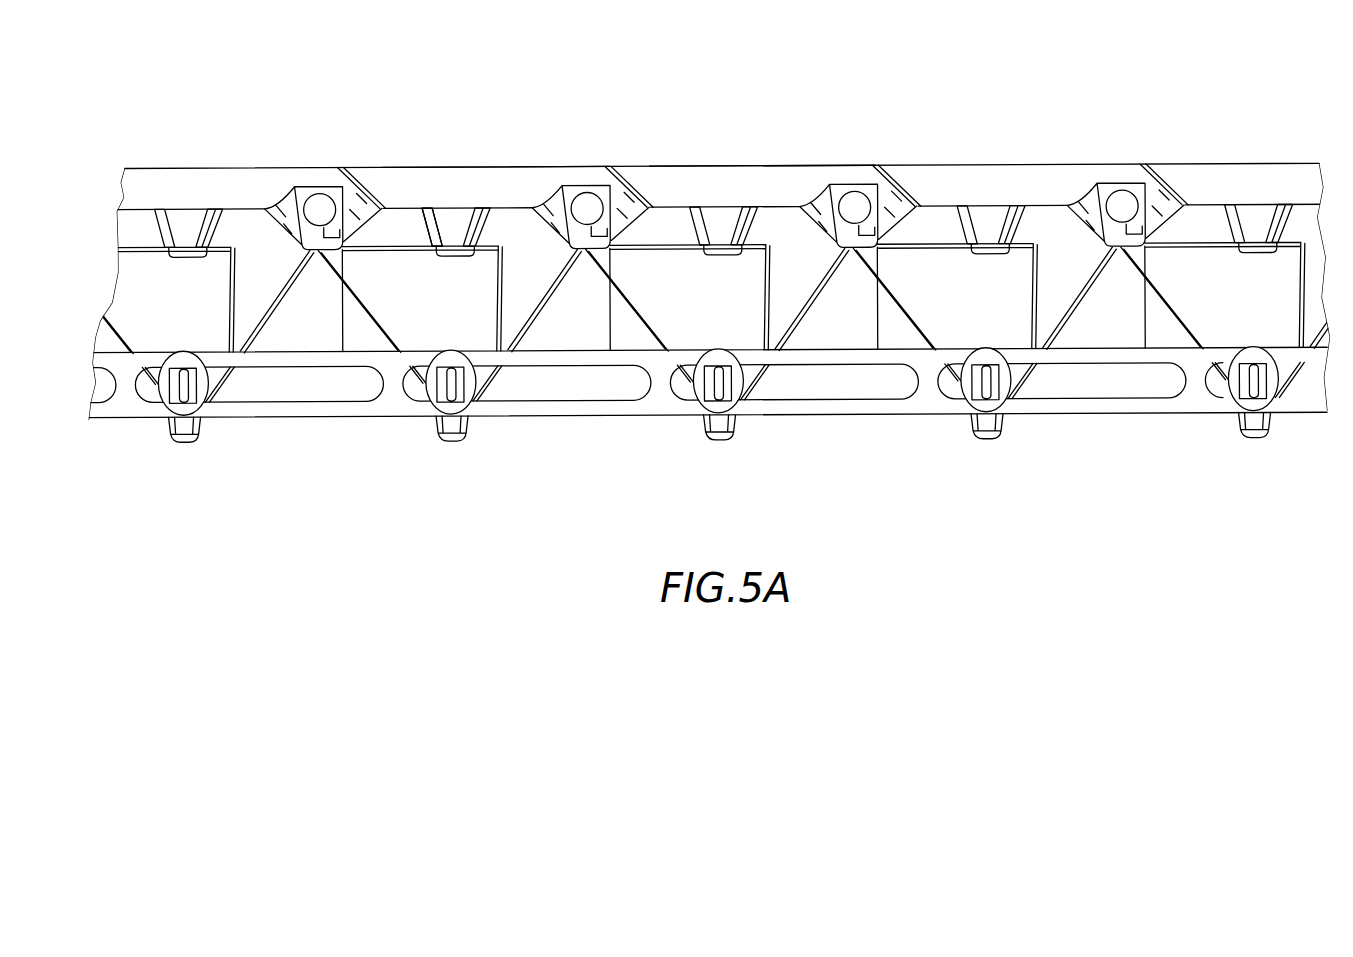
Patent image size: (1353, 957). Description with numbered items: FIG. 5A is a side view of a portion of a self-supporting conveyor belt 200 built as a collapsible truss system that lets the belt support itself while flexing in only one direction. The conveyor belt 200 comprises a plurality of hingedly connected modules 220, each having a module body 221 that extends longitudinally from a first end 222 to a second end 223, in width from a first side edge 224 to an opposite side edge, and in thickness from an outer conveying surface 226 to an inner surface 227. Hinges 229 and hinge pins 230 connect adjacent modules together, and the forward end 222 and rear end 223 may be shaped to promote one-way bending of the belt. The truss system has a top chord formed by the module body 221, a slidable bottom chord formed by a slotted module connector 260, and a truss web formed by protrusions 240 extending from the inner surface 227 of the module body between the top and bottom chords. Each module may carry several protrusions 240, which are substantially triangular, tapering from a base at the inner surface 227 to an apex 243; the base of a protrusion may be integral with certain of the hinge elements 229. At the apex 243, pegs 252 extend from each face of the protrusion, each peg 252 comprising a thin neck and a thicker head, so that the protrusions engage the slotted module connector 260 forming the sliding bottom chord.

The conveyor belt 200 is at (790, 92).
The module 220 is at (259, 167).
The module body 221 is at (248, 202).
The first end 222 is at (637, 167).
The second end 223 is at (645, 202).
The first side edge 224 is at (486, 166).
The outer conveying surface 226 is at (740, 167).
The inner surface 227 is at (409, 224).
The hinge 229 is at (321, 256).
The hinge pin 230 is at (316, 216).
The protrusion 240 is at (200, 298).
The apex 243 is at (183, 443).
The peg 252 is at (186, 364).
The slotted module connector 260 is at (343, 413).